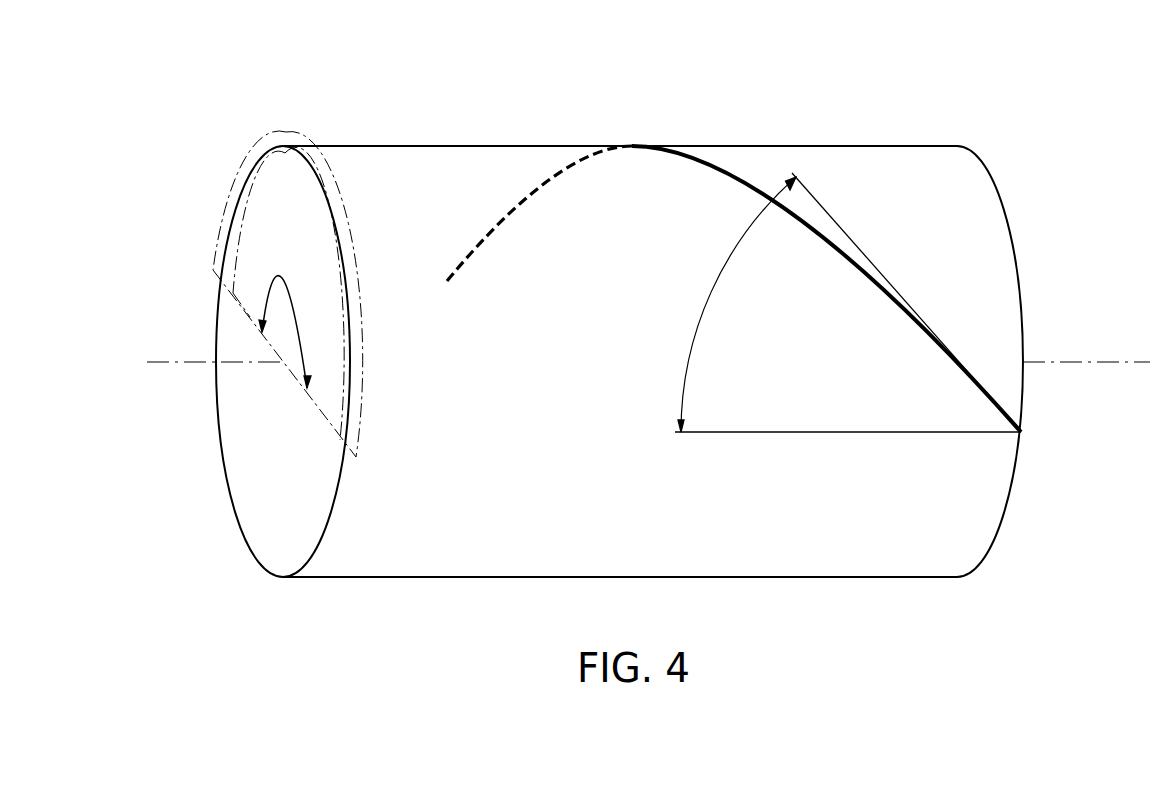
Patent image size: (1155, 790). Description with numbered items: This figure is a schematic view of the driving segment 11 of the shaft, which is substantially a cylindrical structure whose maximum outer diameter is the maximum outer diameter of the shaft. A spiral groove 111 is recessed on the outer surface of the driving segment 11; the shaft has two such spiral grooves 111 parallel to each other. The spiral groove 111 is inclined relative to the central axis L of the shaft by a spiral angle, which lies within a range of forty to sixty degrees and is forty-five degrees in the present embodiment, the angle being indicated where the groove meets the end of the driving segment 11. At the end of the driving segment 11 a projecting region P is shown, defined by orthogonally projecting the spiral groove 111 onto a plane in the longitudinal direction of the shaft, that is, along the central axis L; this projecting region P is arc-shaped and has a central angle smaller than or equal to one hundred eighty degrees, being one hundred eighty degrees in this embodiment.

The driving segment 11 is at (857, 145).
The spiral groove 111 is at (737, 164).
The projecting region P is at (248, 163).
The central axis L is at (1097, 361).